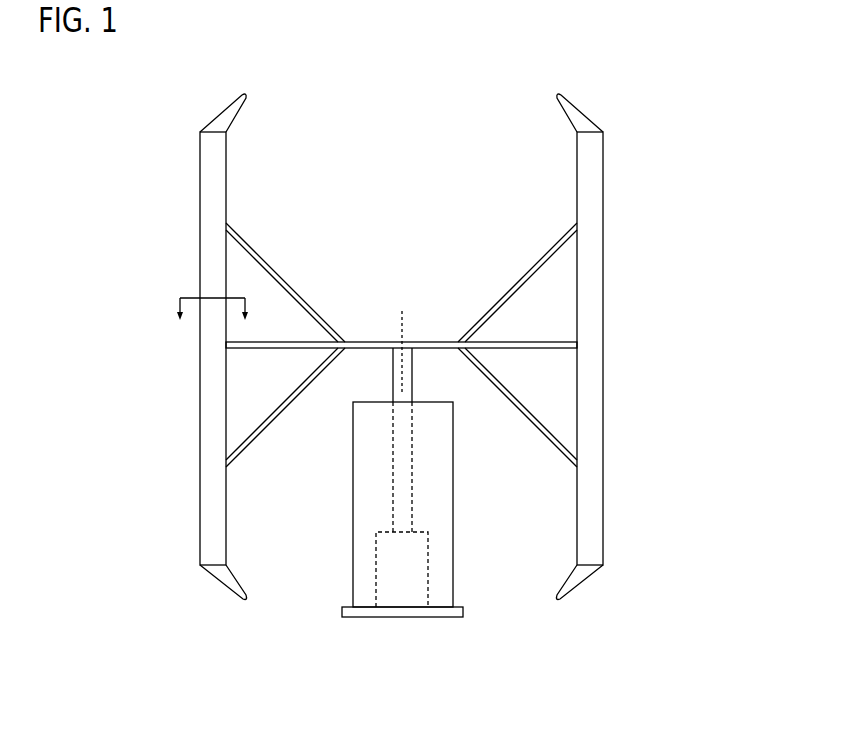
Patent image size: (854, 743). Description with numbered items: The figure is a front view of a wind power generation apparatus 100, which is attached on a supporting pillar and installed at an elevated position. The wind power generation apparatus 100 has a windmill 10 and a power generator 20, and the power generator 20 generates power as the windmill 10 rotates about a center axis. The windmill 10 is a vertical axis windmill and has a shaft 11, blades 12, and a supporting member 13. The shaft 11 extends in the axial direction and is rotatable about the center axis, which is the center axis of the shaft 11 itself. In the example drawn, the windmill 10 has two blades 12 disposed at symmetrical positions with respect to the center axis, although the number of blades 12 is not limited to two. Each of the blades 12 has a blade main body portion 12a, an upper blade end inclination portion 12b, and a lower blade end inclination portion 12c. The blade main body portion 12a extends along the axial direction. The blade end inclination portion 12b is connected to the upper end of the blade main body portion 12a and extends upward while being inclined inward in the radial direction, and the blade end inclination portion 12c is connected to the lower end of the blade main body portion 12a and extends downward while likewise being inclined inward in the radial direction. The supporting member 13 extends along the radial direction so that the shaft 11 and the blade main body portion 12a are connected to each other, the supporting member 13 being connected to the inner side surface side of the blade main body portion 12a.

The wind power generation apparatus 100 is at (641, 61).
The windmill 10 is at (365, 313).
The shaft 11 is at (398, 462).
The blades 12 is at (718, 113).
The blade main body portion 12a is at (602, 413).
The blade end inclination portion 12b is at (582, 119).
The blade end inclination portion 12c is at (585, 578).
The supporting member 13 is at (440, 345).
The power generator 20 is at (417, 593).